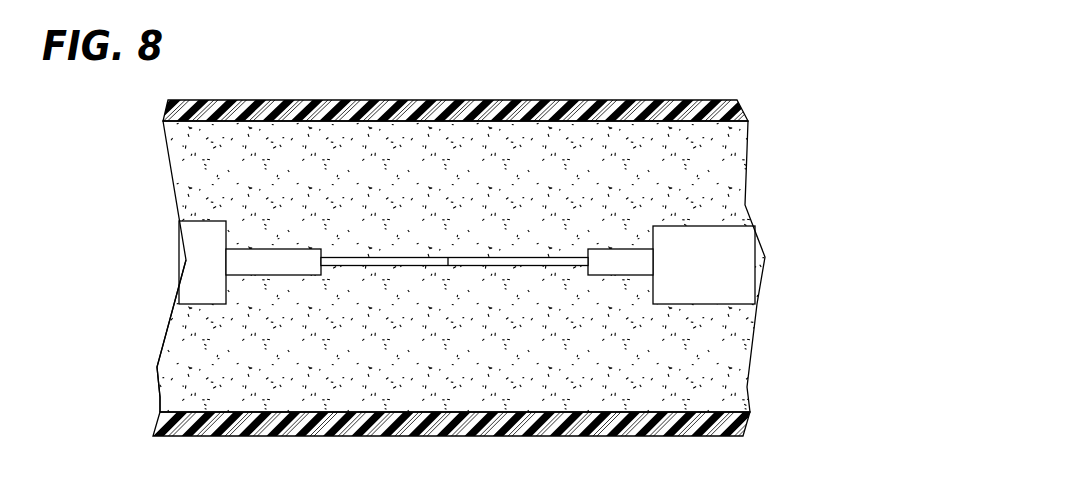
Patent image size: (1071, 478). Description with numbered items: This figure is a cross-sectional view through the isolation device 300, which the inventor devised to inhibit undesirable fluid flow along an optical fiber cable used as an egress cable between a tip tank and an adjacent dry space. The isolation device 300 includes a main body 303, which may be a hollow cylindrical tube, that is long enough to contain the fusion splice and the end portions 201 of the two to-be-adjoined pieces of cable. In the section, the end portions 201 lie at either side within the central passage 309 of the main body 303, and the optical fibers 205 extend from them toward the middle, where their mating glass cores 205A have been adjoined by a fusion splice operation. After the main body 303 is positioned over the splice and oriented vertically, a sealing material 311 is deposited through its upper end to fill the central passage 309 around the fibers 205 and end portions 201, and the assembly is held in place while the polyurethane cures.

The isolation device 300 is at (448, 219).
The main body 303 is at (397, 100).
The sealing material 311 is at (475, 180).
The central passage 309 is at (139, 349).
The end portion 201 is at (203, 248).
The optical fiber 205 is at (272, 262).
The glass core 205A is at (385, 260).